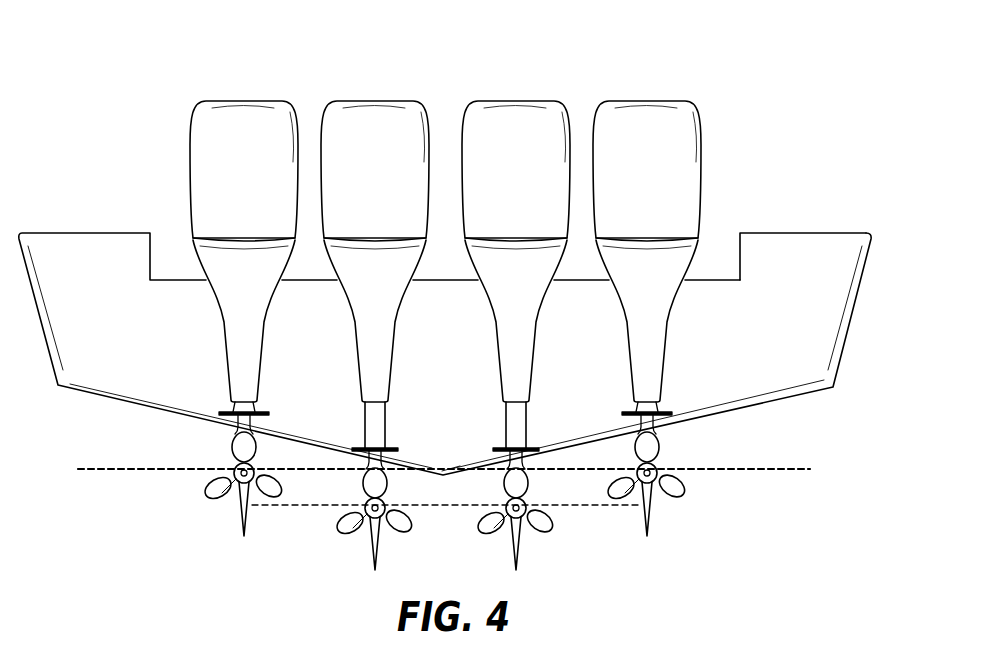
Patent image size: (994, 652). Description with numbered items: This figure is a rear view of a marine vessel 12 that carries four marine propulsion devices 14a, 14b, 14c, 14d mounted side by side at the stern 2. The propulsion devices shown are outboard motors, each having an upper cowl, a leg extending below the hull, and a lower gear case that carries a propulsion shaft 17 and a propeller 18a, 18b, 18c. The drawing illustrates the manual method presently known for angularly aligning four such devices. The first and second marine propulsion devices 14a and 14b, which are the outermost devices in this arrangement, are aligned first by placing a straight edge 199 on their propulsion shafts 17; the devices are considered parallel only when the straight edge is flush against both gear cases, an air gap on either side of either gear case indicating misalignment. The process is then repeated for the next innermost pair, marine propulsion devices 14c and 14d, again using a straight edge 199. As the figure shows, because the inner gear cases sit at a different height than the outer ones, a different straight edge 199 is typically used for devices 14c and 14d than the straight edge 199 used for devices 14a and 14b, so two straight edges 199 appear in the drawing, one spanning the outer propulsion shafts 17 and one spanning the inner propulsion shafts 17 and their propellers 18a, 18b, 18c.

The stern 2 is at (783, 240).
The marine vessel 12 is at (874, 212).
The marine propulsion device 14a is at (268, 80).
The marine propulsion device 14b is at (403, 80).
The marine propulsion device 14c is at (543, 80).
The marine propulsion device 14d is at (675, 80).
The propulsion shaft 17 is at (213, 493).
The propeller 18a is at (238, 448).
The propeller 18b is at (337, 522).
The propeller 18c is at (480, 520).
The straight edge 199 is at (757, 468).